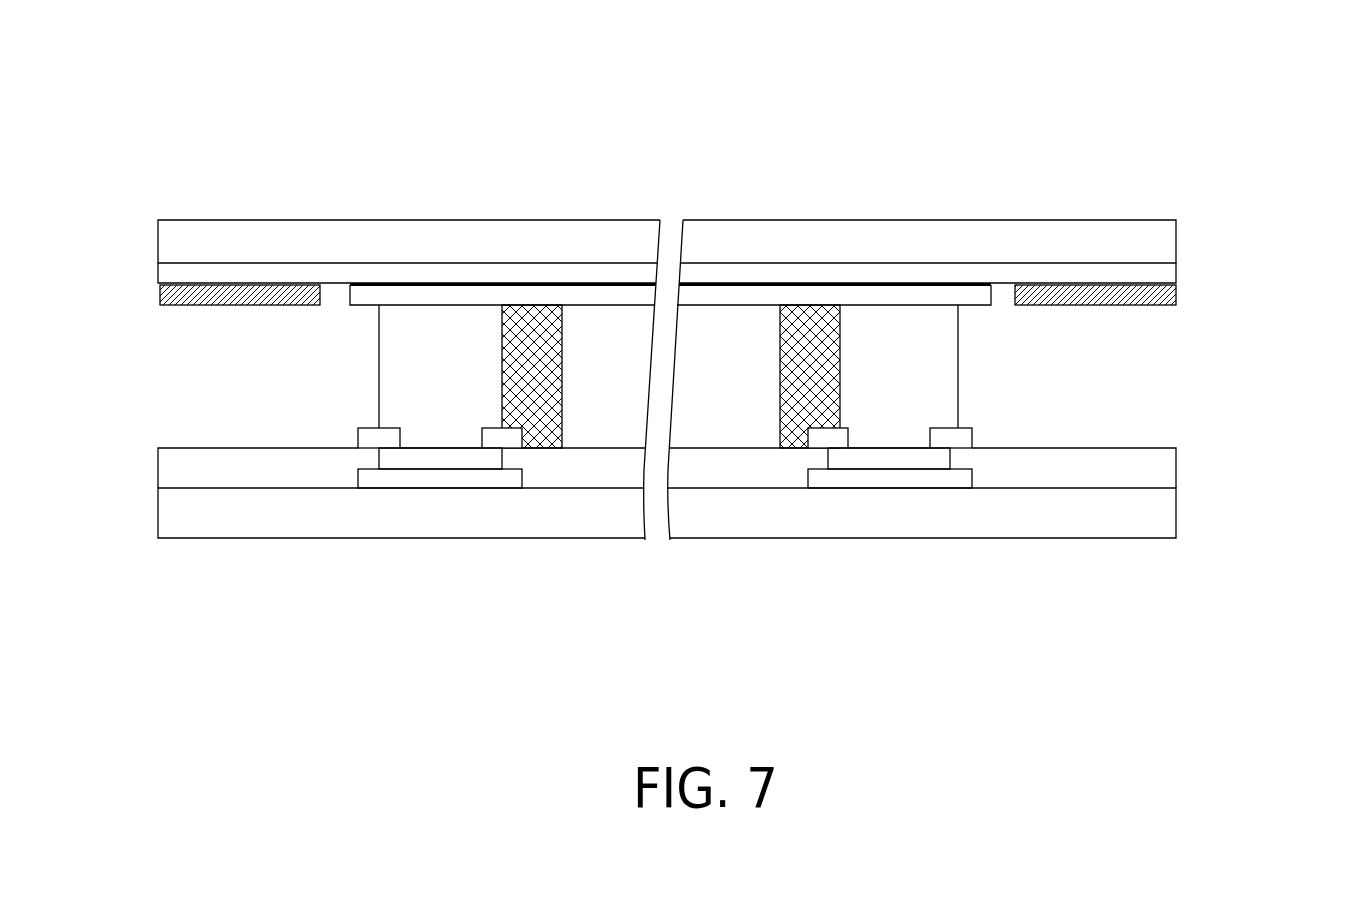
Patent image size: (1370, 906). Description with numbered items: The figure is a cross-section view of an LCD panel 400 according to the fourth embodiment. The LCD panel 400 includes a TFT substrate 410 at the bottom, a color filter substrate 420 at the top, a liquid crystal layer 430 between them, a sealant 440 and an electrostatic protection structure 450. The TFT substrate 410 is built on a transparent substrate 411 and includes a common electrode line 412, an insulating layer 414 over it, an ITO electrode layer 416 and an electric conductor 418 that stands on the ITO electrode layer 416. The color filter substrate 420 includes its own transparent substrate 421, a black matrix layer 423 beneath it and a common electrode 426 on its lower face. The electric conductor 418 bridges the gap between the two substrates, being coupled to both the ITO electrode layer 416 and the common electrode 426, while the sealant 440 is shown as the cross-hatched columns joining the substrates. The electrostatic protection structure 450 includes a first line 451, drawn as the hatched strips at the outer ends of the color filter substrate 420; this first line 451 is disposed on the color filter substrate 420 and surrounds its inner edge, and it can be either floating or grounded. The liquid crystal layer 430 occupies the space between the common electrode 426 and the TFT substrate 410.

The LCD panel 400 is at (1324, 63).
The TFT substrate 410 is at (150, 448).
The transparent substrate 411 is at (1145, 526).
The common electrode line 412 is at (915, 483).
The insulating layer 414 is at (1159, 476).
The ITO electrode layer 416 is at (838, 458).
The electric conductor 418 is at (927, 370).
The color filter substrate 420 is at (150, 223).
The transparent substrate 421 is at (1135, 232).
The black matrix layer 423 is at (1155, 272).
The common electrode 426 is at (962, 297).
The liquid crystal layer 430 is at (723, 323).
The sealant 440 is at (813, 323).
The electrostatic protection structure 450 is at (761, 310).
The first line 451 is at (1168, 292).